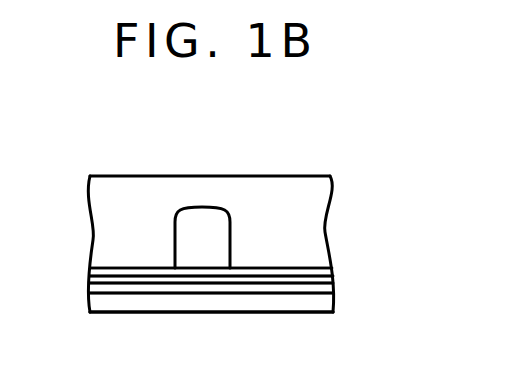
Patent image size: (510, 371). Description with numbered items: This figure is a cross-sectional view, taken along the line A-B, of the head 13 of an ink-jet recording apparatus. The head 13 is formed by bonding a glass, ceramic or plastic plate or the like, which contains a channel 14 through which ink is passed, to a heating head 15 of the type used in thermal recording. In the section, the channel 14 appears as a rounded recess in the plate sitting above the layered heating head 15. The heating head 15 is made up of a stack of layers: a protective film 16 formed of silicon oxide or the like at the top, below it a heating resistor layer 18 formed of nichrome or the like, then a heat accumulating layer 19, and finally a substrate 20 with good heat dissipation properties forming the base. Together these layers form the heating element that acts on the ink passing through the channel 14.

The head 13 is at (120, 176).
The channel 14 is at (210, 207).
The heating head 15 is at (352, 263).
The protective film 16 is at (277, 268).
The heating resistor layer 18 is at (290, 277).
The heat accumulating layer 19 is at (307, 290).
The substrate 20 is at (292, 312).